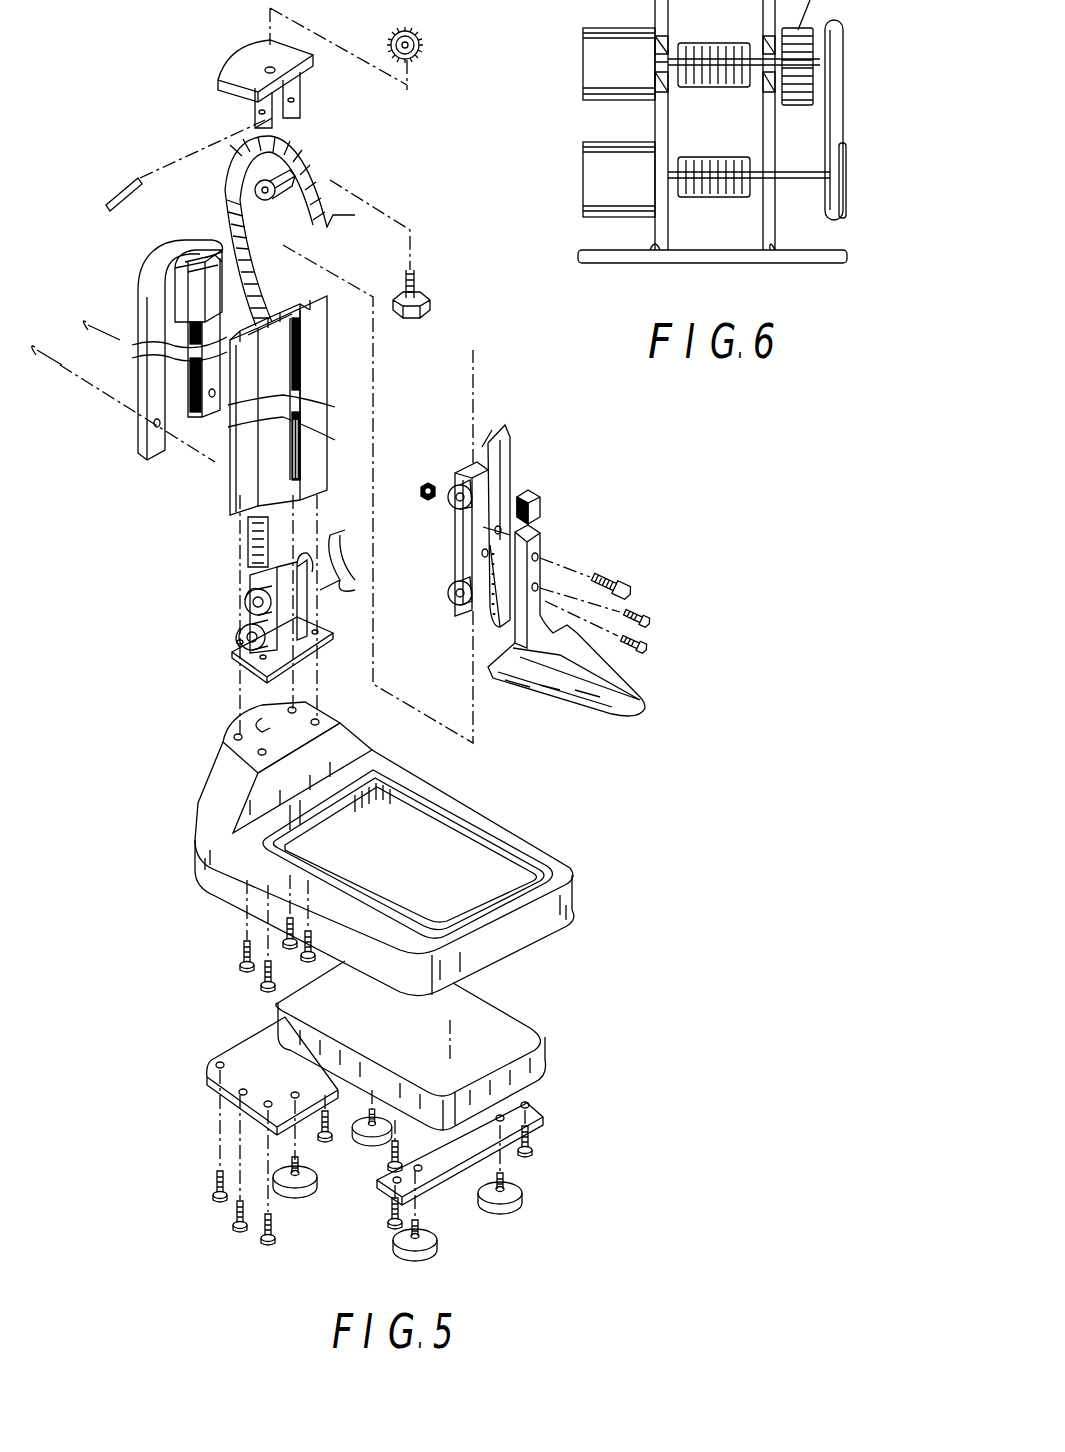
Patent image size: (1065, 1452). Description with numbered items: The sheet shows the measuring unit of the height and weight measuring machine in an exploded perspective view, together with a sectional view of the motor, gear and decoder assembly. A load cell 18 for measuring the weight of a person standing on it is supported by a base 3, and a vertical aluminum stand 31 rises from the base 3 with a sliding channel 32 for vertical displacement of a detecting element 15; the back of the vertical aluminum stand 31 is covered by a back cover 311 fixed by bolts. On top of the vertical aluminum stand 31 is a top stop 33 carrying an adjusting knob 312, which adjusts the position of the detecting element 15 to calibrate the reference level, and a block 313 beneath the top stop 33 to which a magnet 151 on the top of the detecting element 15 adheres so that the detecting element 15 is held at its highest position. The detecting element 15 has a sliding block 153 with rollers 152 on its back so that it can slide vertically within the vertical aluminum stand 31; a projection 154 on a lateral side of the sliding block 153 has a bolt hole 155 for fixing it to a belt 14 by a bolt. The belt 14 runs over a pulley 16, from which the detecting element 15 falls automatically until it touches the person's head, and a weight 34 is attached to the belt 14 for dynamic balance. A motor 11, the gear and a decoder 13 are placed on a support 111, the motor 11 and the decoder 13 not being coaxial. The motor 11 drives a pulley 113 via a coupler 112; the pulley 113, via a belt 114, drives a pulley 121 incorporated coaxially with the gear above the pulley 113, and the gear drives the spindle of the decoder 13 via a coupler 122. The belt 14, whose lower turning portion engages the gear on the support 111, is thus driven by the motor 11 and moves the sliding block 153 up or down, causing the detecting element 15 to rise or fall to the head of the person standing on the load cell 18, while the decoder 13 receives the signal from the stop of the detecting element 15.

In FIG. 5, the base 3 is at (350, 760).
In FIG. 6, the motor 11 is at (597, 182).
In FIG. 5, the motor 11 is at (240, 630).
In FIG. 6, the decoder 13 is at (607, 48).
In FIG. 5, the decoder 13 is at (245, 600).
In FIG. 5, the belt 14 is at (285, 238).
In FIG. 5, the detecting element 15 is at (612, 710).
In FIG. 5, the pulley 16 is at (285, 180).
In FIG. 5, the load cell 18 is at (520, 1045).
In FIG. 5, the vertical aluminum stand 31 is at (250, 480).
In FIG. 5, the sliding channel 32 is at (300, 438).
In FIG. 5, the top stop 33 is at (235, 70).
In FIG. 5, the weight 34 is at (150, 247).
In FIG. 6, the support 111 is at (770, 237).
In FIG. 5, the support 111 is at (243, 660).
In FIG. 6, the coupler 112 is at (720, 183).
In FIG. 6, the pulley 113 is at (843, 185).
In FIG. 6, the belt 114 is at (833, 122).
In FIG. 5, the belt 114 is at (305, 598).
In FIG. 6, the pulley 121 is at (843, 58).
In FIG. 6, the coupler 122 is at (708, 70).
In FIG. 5, the magnet 151 is at (543, 503).
In FIG. 5, the rollers 152 is at (492, 470).
In FIG. 5, the sliding block 153 is at (462, 540).
In FIG. 5, the projection 154 is at (505, 528).
In FIG. 5, the bolt hole 155 is at (500, 532).
In FIG. 5, the back cover 311 is at (137, 380).
In FIG. 5, the adjusting knob 312 is at (418, 55).
In FIG. 5, the block 313 is at (430, 310).